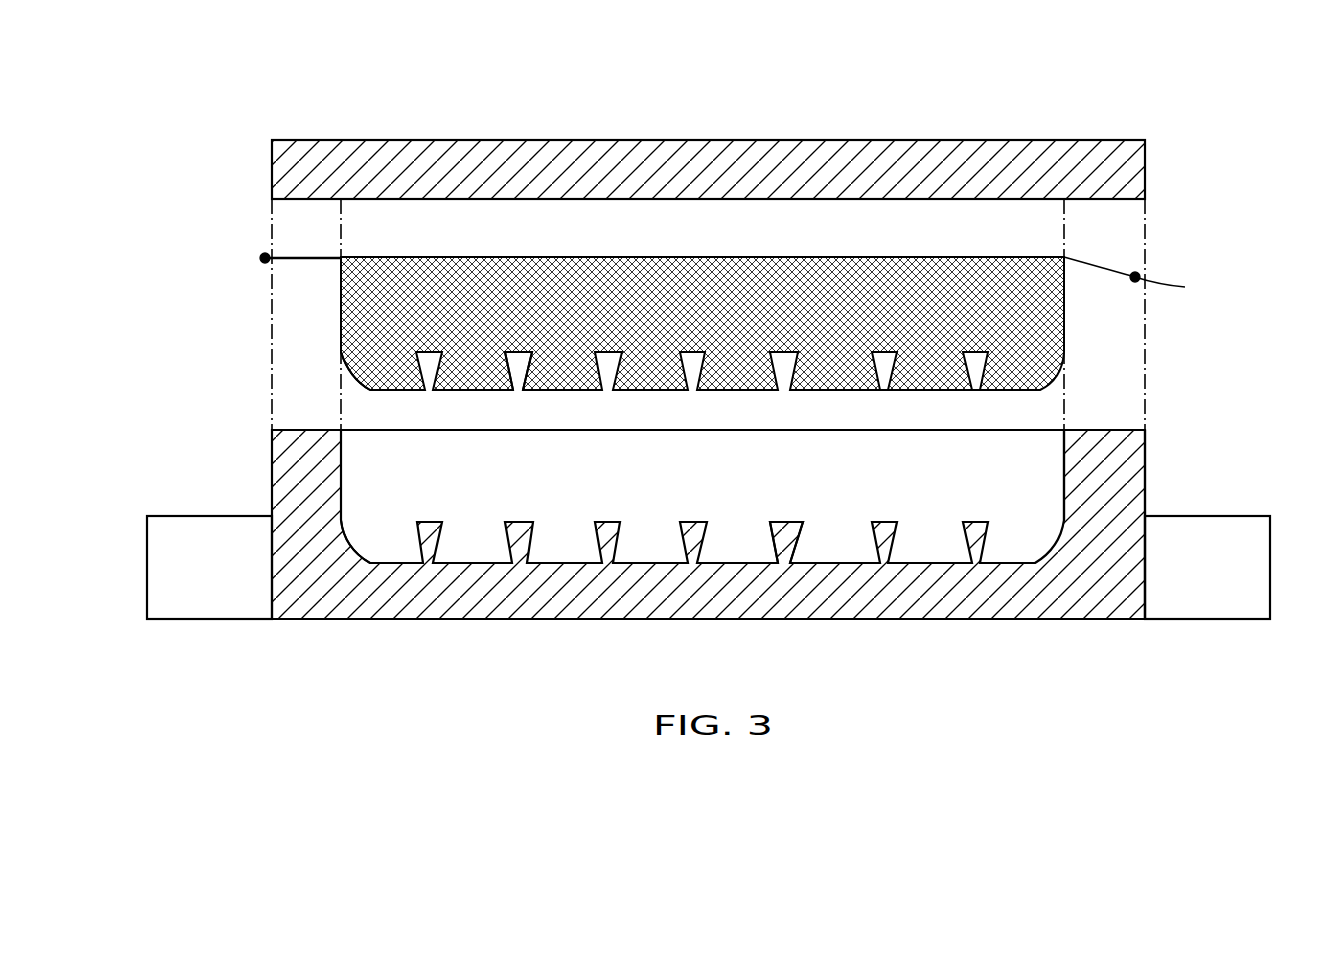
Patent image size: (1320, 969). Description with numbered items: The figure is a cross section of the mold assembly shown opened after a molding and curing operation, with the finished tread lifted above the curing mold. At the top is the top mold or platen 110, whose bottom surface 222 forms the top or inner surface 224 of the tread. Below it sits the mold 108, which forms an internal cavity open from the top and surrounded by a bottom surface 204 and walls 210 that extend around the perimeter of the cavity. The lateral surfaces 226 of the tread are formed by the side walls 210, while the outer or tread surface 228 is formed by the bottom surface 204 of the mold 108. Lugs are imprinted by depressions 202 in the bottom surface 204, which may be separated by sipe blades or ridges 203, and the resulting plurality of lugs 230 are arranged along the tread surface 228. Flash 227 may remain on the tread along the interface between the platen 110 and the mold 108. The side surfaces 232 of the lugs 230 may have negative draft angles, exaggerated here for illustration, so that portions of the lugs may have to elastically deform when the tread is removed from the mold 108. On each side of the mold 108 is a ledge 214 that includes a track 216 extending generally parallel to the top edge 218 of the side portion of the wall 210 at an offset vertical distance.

The top mold or platen 110 is at (1040, 155).
The bottom surface of platen 222 is at (1093, 201).
The top or inner surface of tread 224 is at (408, 257).
The lateral surfaces of tread 226 is at (341, 287).
The flash 227 is at (1149, 280).
The outer or tread surface 228 is at (940, 390).
The lugs 230 is at (443, 392).
The side surfaces of lugs 232 is at (525, 373).
The top edge of wall 218 is at (1140, 428).
The mold 108 is at (280, 452).
The walls 210 is at (1123, 482).
The tracks or ledges 214 is at (170, 567).
The track 216 is at (158, 516).
The bottom surface of mold 204 is at (787, 522).
The sipe blades or ridges 203 is at (417, 530).
The depressions 202 is at (648, 538).